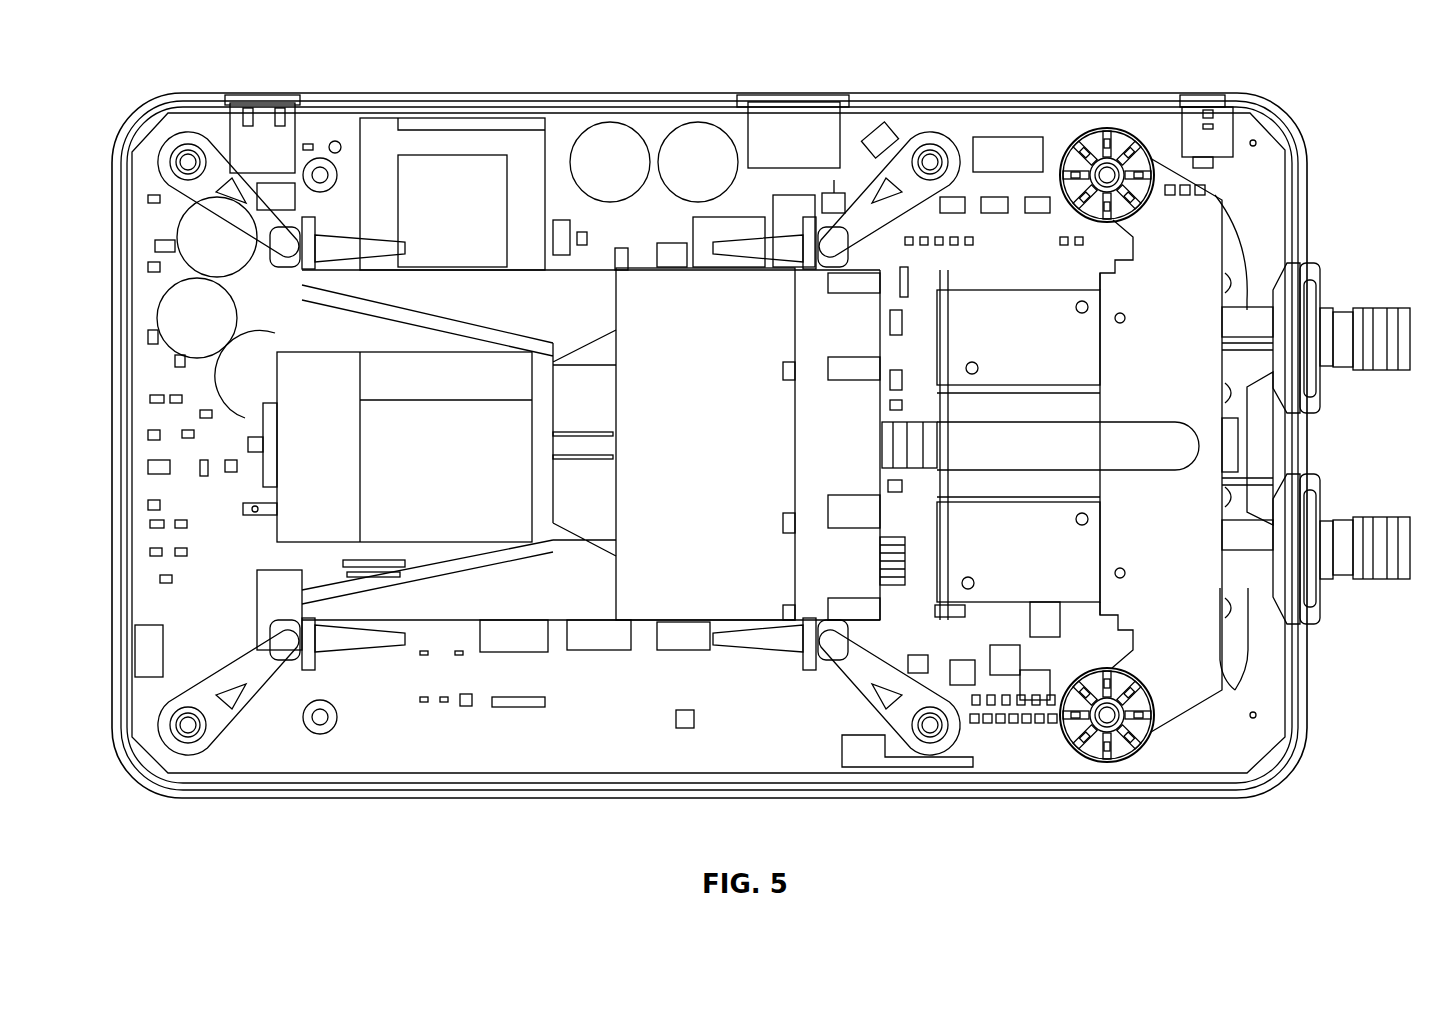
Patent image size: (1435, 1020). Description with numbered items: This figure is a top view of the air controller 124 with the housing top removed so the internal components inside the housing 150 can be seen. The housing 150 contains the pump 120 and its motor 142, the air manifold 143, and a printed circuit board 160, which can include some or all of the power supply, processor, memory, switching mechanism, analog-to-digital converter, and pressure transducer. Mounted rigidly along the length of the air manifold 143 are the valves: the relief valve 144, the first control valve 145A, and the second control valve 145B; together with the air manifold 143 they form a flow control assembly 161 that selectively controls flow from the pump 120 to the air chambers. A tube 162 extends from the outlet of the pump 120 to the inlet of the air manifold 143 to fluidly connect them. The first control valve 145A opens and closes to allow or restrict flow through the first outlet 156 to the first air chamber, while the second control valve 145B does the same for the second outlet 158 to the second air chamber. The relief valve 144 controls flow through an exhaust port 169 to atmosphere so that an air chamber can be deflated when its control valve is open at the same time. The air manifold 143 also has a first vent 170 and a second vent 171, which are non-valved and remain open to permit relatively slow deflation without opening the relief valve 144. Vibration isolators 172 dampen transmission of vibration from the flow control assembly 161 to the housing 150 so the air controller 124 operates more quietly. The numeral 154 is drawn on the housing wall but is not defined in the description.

The air controller 124 is at (183, 84).
The pump 120 is at (650, 266).
The motor 142 is at (330, 463).
The air manifold 143 is at (1174, 248).
The relief valve 144 is at (990, 412).
The first control valve 145A is at (1018, 549).
The second control valve 145B is at (1018, 341).
The housing 150 is at (144, 783).
The housing wall 154 is at (218, 795).
The first outlet 156 is at (1370, 583).
The second outlet 158 is at (1365, 305).
The printed circuit board 160 is at (528, 747).
The flow control assembly 161 is at (1262, 239).
The tube 162 is at (1157, 462).
The exhaust port 169 is at (1240, 447).
The first vent 170 is at (1125, 573).
The second vent 171 is at (1125, 318).
The vibration isolators 172 is at (1092, 138).